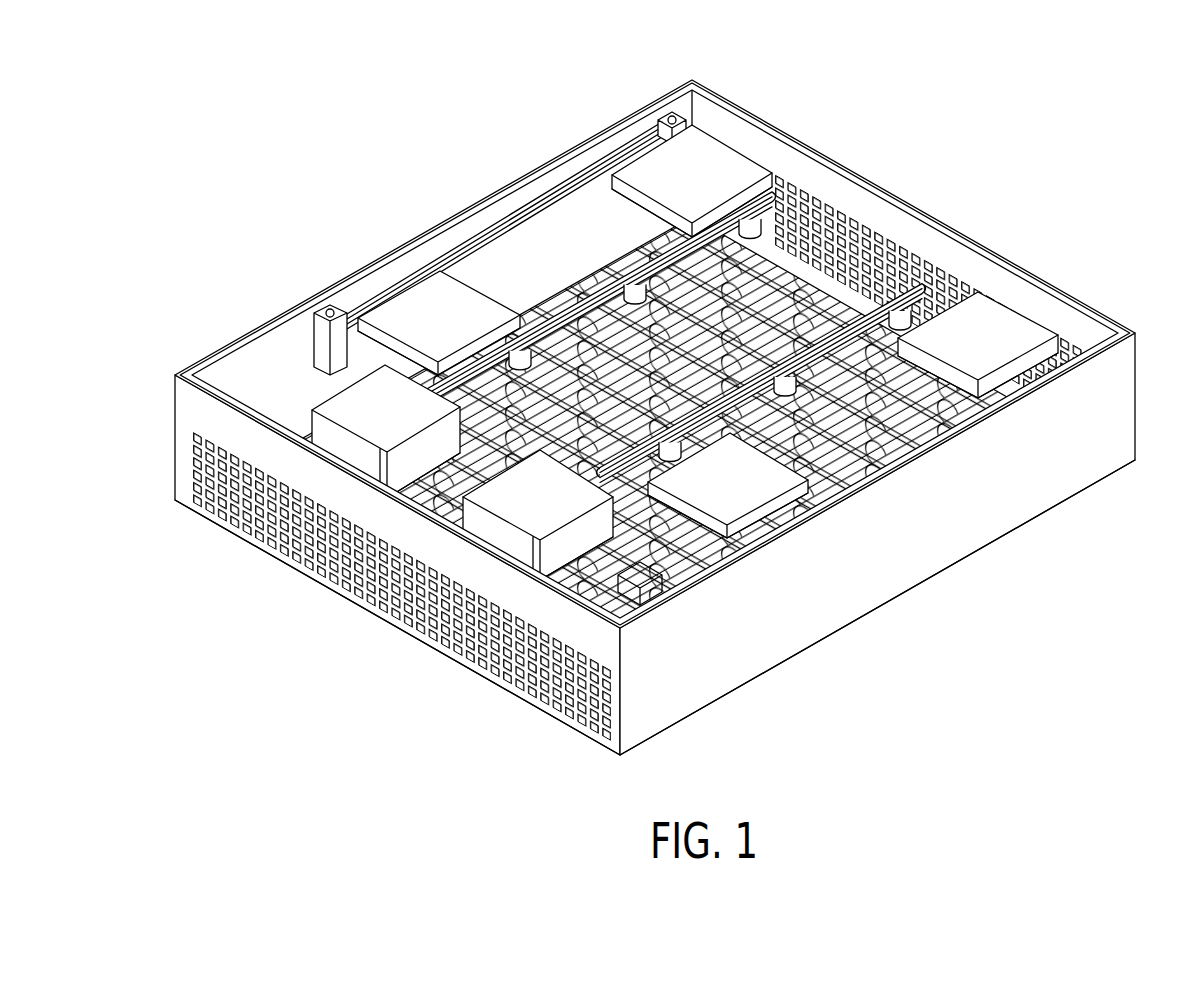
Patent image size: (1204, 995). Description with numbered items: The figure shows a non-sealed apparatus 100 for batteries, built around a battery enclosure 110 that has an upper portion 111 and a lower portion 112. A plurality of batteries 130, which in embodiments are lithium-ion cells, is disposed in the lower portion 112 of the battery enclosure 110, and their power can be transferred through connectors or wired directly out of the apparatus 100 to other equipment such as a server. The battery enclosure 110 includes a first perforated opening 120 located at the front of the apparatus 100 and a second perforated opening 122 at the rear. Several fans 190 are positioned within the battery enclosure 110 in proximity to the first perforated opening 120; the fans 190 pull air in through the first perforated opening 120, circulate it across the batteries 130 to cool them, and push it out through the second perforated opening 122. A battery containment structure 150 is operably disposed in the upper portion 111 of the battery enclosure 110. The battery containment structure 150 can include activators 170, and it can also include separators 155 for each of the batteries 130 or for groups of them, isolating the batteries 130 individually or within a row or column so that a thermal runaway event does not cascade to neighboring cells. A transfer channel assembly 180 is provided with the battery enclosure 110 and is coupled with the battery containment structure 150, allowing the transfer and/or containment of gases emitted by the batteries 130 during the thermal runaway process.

The non-sealed apparatus 100 is at (1070, 110).
The battery enclosure 110 is at (668, 404).
The upper portion 111 is at (1118, 324).
The lower portion 112 is at (1137, 436).
The first perforated opening 120 is at (188, 488).
The second perforated opening 122 is at (788, 189).
The batteries 130 is at (850, 440).
The battery containment structure 150 is at (510, 278).
The separators 155 is at (798, 307).
The activators 170 is at (402, 323).
The transfer channel assembly 180 is at (560, 313).
The fans 190 is at (292, 395).